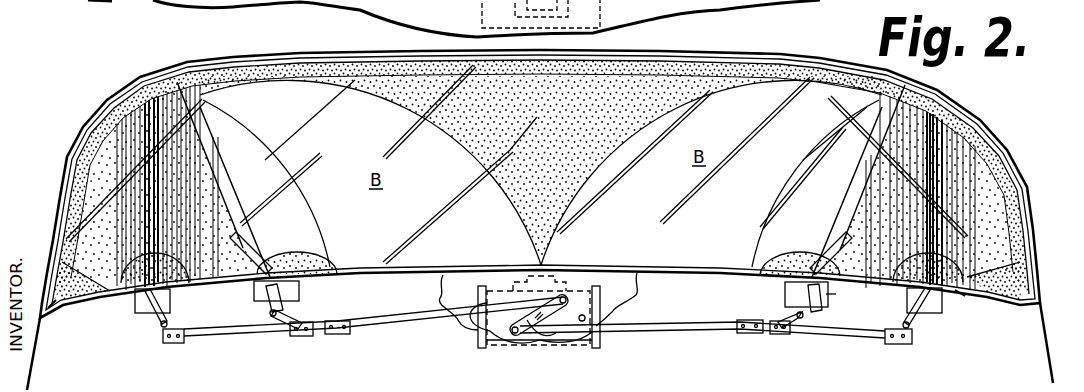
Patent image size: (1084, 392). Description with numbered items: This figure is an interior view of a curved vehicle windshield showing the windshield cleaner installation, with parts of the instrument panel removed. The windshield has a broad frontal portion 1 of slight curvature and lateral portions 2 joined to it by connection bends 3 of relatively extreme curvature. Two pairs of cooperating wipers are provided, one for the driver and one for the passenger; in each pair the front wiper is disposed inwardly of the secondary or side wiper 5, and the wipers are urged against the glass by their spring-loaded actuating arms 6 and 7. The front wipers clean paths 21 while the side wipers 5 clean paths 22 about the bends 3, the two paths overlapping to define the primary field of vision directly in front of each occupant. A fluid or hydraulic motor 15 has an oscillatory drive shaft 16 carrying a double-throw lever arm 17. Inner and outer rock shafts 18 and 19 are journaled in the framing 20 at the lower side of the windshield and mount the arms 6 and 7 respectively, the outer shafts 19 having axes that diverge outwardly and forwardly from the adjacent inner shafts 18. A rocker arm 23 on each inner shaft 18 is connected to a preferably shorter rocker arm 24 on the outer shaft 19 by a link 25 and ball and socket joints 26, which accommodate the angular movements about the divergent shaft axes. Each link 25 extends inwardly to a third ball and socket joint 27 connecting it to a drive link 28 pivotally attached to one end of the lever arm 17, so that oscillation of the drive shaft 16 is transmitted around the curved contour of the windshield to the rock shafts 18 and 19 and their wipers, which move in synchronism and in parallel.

The broad frontal portion 1 is at (531, 121).
The lateral portions 2 is at (100, 151).
The connection bends 3 is at (177, 84).
The secondary or side wipers 5 is at (89, 272).
The drive or actuating arm 6 is at (243, 252).
The drive or actuating arm 7 is at (53, 303).
The fluid or hydraulic motor 15 is at (598, 344).
The oscillatory drive shaft 16 is at (529, 322).
The double-throw lever arm 17 is at (551, 334).
The inner rock shaft 18 is at (264, 296).
The outer rock shaft 19 is at (143, 304).
The framing 20 is at (823, 294).
The wiper paths of front wipers 21 is at (503, 210).
The wiper paths of side wipers 22 is at (322, 215).
The rocker arm 23 is at (292, 320).
The rocker arm 24 is at (172, 332).
The link 25 is at (235, 338).
The ball and socket joints 26 is at (172, 343).
The third ball and socket joint 27 is at (340, 335).
The drive link 28 is at (408, 325).